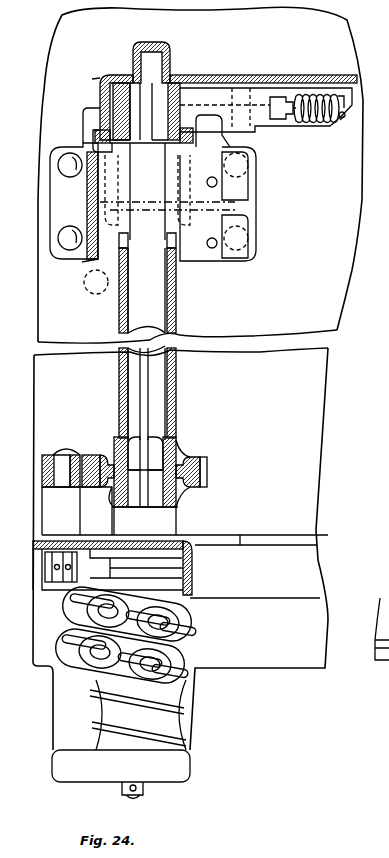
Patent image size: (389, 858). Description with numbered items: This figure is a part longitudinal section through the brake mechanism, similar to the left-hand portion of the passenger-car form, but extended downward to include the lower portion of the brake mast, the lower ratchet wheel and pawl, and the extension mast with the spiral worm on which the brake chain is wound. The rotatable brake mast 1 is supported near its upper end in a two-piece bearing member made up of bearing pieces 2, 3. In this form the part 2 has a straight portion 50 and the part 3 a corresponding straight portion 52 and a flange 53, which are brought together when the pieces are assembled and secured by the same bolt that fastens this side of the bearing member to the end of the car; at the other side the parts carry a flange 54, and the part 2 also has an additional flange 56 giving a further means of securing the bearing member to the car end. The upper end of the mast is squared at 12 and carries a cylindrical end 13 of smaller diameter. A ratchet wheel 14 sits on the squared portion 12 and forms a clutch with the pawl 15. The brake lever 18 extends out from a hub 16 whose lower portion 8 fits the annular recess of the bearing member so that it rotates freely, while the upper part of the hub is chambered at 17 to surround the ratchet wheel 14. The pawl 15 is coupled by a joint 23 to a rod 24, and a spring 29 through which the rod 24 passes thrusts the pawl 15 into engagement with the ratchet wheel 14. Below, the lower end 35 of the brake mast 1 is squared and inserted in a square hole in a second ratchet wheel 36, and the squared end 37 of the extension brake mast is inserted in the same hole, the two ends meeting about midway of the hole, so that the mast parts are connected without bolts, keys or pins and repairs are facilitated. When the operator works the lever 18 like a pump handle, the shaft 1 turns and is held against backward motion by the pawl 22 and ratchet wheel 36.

The brake mast 1 is at (147, 336).
The bearing piece 2 is at (244, 236).
The bearing piece 3 is at (57, 156).
The portion of the end of the brake lever 8 is at (167, 191).
The squared portion of the mast 12 is at (140, 105).
The cylindrical end 13 is at (151, 55).
The ratchet wheel 14 is at (102, 78).
The pawl 15 is at (240, 90).
The hub of the brake lever 16 is at (118, 75).
The chamber 17 is at (95, 135).
The brake lever 18 is at (331, 75).
The pawl 22 is at (48, 455).
The joint 23 is at (286, 95).
The rod 24 is at (342, 121).
The spring 29 is at (308, 123).
The lower end of the brake mast 35 is at (160, 455).
The ratchet wheel 36 is at (90, 455).
The end of the extension brake mast 37 is at (155, 484).
The straight portion 50 is at (96, 282).
The straight portion 52 is at (82, 262).
The flange 53 is at (78, 205).
The flange 54 is at (216, 247).
The flange 56 is at (246, 195).